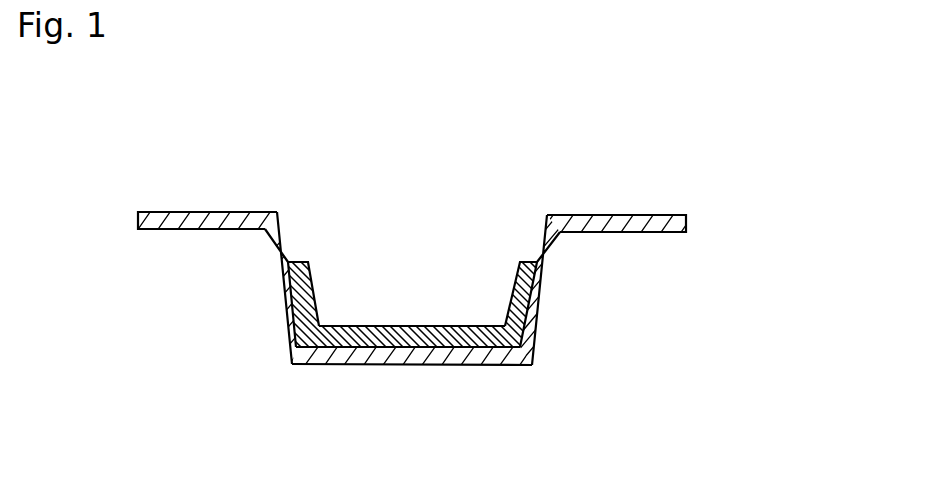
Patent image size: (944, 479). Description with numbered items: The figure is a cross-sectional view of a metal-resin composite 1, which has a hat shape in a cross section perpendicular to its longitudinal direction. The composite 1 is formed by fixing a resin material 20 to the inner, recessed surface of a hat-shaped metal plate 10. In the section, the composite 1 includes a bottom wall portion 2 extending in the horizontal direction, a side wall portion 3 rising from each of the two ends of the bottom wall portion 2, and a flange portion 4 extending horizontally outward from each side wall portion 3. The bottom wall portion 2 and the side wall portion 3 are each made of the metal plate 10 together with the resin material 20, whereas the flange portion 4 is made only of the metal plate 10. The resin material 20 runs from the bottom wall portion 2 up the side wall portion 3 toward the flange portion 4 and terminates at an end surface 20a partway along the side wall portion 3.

The metal-resin composite 1 is at (464, 281).
The metal plate 10 is at (443, 300).
The bottom wall portion 2 is at (401, 366).
The side wall portion 3 is at (287, 312).
The flange portion 4 is at (209, 212).
The resin material 20 is at (416, 269).
The end surface 20a is at (297, 260).